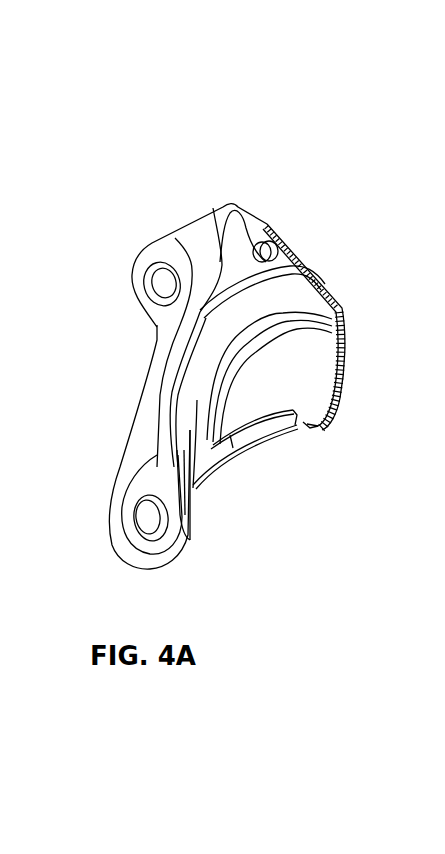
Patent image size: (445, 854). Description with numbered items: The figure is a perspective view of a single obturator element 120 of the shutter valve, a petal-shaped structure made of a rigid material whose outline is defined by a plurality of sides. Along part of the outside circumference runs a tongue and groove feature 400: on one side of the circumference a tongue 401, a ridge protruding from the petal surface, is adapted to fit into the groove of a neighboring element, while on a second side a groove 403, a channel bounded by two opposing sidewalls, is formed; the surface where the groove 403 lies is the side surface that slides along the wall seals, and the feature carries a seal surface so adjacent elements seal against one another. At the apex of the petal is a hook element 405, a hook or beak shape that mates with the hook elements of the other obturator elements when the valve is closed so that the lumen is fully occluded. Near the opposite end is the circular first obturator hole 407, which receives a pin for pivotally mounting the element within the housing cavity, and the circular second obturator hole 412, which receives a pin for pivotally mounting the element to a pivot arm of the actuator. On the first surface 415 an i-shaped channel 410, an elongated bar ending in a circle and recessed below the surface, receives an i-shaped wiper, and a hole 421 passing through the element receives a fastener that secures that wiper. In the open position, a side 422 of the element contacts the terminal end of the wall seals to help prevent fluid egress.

The obturator element 120 is at (136, 156).
The tongue and groove feature 400 is at (251, 446).
The tongue 401 is at (200, 483).
The groove 403 is at (329, 364).
The hook element 405 is at (310, 423).
The first obturator hole 407 is at (146, 517).
The i-shaped channel 410 is at (232, 224).
The second obturator hole 412 is at (163, 281).
The first surface 415 is at (135, 437).
The hole 421 is at (255, 242).
The side 422 is at (248, 214).